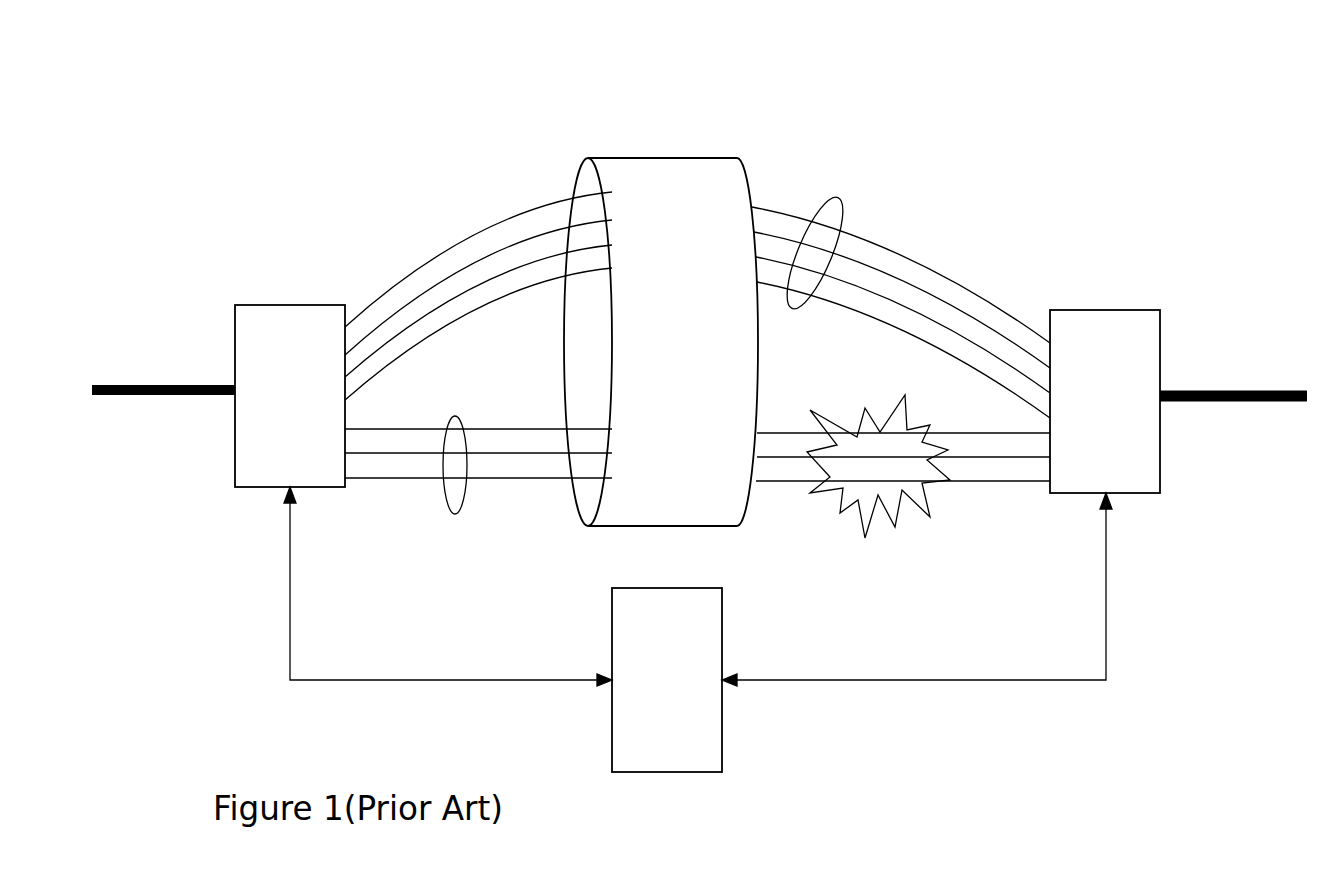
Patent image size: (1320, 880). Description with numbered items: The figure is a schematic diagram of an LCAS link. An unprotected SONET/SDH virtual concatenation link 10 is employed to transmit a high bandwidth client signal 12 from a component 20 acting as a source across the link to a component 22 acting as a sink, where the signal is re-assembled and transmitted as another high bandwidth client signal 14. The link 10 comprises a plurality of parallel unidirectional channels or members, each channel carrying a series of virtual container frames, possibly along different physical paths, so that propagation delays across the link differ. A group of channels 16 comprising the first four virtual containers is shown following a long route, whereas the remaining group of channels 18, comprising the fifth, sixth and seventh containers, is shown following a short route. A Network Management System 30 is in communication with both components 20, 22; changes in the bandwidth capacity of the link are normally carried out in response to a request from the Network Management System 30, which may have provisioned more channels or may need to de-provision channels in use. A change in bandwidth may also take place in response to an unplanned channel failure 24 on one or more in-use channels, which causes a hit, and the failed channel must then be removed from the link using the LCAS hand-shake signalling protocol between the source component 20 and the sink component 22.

The virtual concatenation link 10 is at (540, 173).
The high bandwidth client signal 12 is at (163, 372).
The high bandwidth client signal 14 is at (1233, 377).
The group of channels 16 is at (843, 210).
The lower group of virtually concatenated paths (fibers) 18 is at (460, 423).
The component acting as a source 20 is at (290, 381).
The component acting as a sink 22 is at (1105, 387).
The channel failure 24 is at (857, 528).
The Network Management System 30 is at (698, 629).